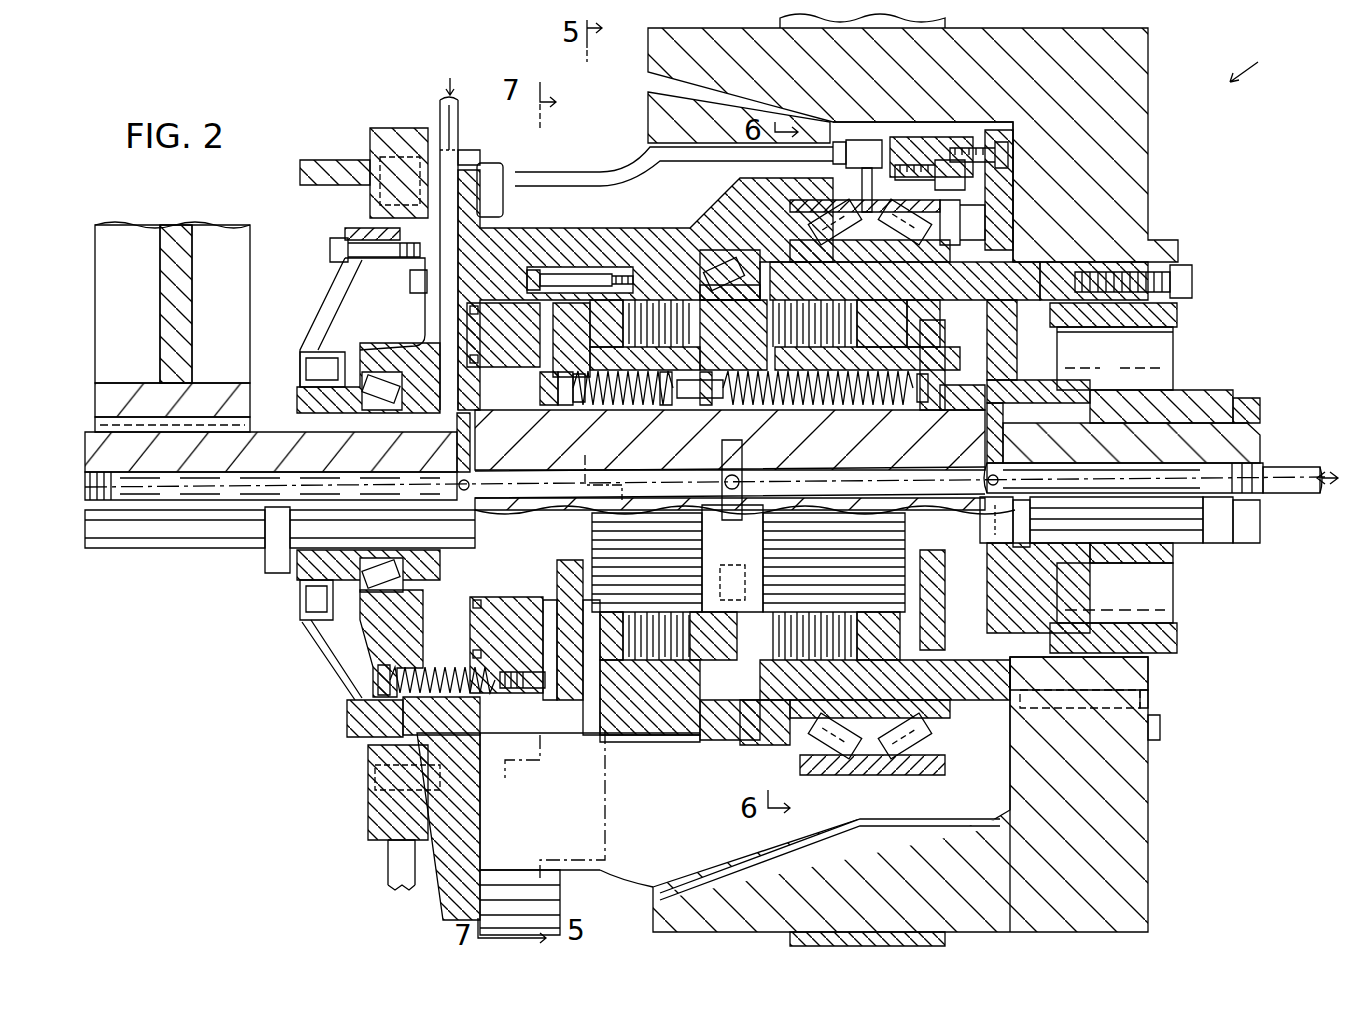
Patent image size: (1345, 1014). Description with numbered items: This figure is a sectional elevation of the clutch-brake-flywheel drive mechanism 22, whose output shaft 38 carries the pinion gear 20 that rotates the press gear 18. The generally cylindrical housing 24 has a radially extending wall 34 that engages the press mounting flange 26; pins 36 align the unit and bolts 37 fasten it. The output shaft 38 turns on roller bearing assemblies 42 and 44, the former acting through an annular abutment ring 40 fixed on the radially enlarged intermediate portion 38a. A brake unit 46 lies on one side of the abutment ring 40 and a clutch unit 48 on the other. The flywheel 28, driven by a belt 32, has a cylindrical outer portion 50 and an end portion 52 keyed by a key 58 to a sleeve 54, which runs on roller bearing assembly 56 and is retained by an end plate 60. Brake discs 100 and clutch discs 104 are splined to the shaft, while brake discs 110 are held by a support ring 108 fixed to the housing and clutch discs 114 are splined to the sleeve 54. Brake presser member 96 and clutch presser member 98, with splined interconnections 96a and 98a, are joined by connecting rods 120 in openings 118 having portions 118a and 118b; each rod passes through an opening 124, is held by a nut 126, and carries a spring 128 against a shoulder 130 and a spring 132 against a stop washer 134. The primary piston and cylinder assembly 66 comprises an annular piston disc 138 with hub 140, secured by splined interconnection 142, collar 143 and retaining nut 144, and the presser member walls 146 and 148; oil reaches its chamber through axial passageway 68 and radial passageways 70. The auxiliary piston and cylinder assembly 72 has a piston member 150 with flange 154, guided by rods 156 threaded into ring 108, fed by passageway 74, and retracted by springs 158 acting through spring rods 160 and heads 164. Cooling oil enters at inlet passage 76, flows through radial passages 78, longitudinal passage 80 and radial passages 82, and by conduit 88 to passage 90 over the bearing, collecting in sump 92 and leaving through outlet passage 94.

The gear 18 is at (175, 232).
The pinion gear 20 is at (160, 550).
The clutch-brake-flywheel drive mechanism 22 is at (1258, 62).
The housing 24 is at (528, 185).
The mounting flange 26 is at (395, 128).
The flywheel 28 is at (1148, 122).
The drive belt 32 is at (920, 940).
The radially extending wall 34 is at (470, 152).
The pins 36 is at (372, 790).
The bolts 37 is at (495, 166).
The output shaft 38 is at (830, 479).
The intermediate portion 38a is at (794, 532).
The annular abutment ring 40 is at (768, 282).
The roller bearing assembly 42 is at (729, 254).
The roller bearing assembly 44 is at (368, 368).
The brake unit 46 is at (660, 740).
The clutch unit 48 is at (795, 700).
The cylindrical outer portion 50 is at (665, 910).
The radially inwardly extending end portion 52 is at (1148, 760).
The sleeve 54 is at (1148, 672).
The roller bearing assembly 56 is at (841, 202).
The key 58 is at (1152, 728).
The end plate 60 is at (1150, 700).
The piston and cylinder assembly 66 is at (999, 308).
The axial passageway 68 is at (1170, 470).
The radially extending passageways 70 is at (1000, 462).
The piston and cylinder assembly 72 is at (583, 640).
The passageway 74 is at (445, 630).
The inlet passage 76 is at (445, 102).
The radial passages 78 is at (458, 455).
The longitudinal passage 80 is at (398, 472).
The radial passages 82 is at (722, 500).
The conduit 88 is at (638, 168).
The passage 90 is at (872, 180).
The sump 92 is at (572, 863).
The outlet passage 94 is at (460, 912).
The brake presser member 96 is at (602, 685).
The splined interconnection 96a is at (575, 340).
The clutch presser member 98 is at (930, 345).
The splined interconnection 98a is at (885, 345).
The brake discs 100 is at (652, 625).
The clutch discs 104 is at (810, 625).
The support ring 108 is at (648, 255).
The brake discs 110 is at (661, 669).
The clutch discs 114 is at (805, 700).
The longitudinally extending openings 118 is at (640, 412).
The first portion 118a is at (920, 405).
The second portion 118b is at (592, 405).
The connecting rods 120 is at (700, 400).
The opening 124 is at (565, 410).
The nut 126 is at (545, 410).
The biasing compression spring 128 is at (835, 406).
The shoulder 130 is at (730, 400).
The biasing compression spring 132 is at (606, 470).
The stop washer 134 is at (667, 412).
The annular piston disc 138 is at (1000, 550).
The hub 140 is at (1075, 582).
The splined interconnection 142 is at (1075, 420).
The collar 143 is at (1195, 392).
The retaining nut 144 is at (1260, 412).
The apertured radial wall 146 is at (960, 412).
The axially extending annular wall 148 is at (1030, 280).
The annular piston member 150 is at (492, 637).
The radially extending flange 154 is at (533, 268).
The guide rods 156 is at (578, 267).
The biasing compression springs 158 is at (347, 712).
The spring rods 160 is at (515, 700).
The head 164 is at (385, 670).